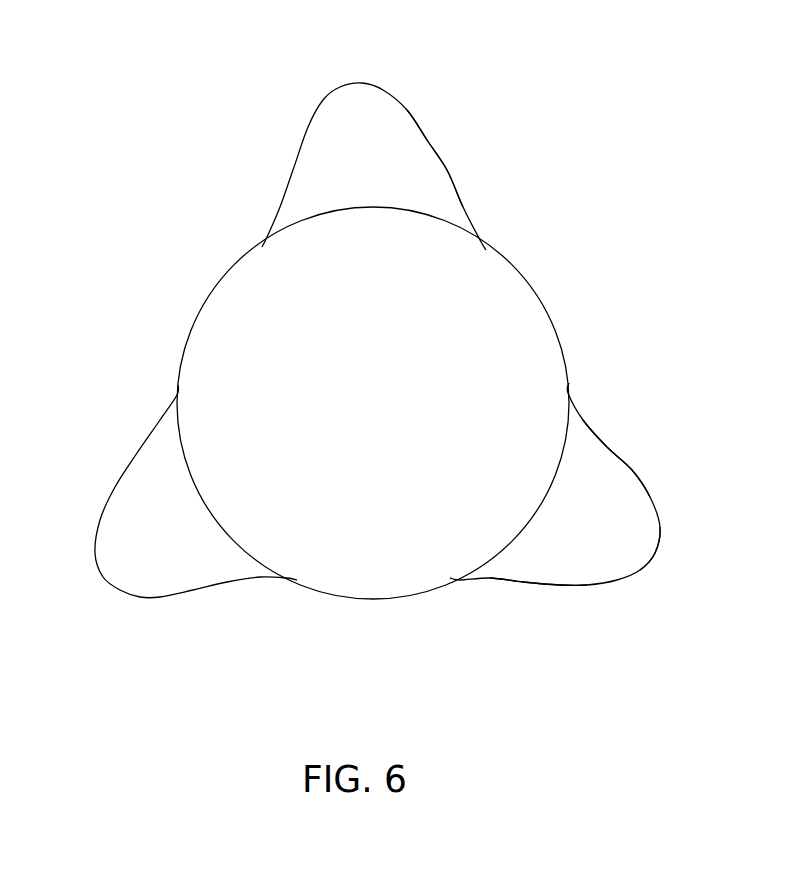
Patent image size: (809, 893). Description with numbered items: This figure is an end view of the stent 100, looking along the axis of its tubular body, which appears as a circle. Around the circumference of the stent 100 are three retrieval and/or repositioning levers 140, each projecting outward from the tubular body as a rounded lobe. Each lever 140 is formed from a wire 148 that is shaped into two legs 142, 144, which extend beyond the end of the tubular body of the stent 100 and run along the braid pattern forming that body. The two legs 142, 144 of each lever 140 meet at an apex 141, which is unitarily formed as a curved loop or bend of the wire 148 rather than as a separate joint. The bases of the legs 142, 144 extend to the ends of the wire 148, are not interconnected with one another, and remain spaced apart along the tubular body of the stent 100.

The stent 100 is at (188, 340).
The retrieval and/or repositioning lever 140 is at (387, 92).
The apex 141 is at (653, 560).
The leg 142 is at (632, 470).
The leg 144 is at (550, 585).
The wire 148 is at (447, 167).